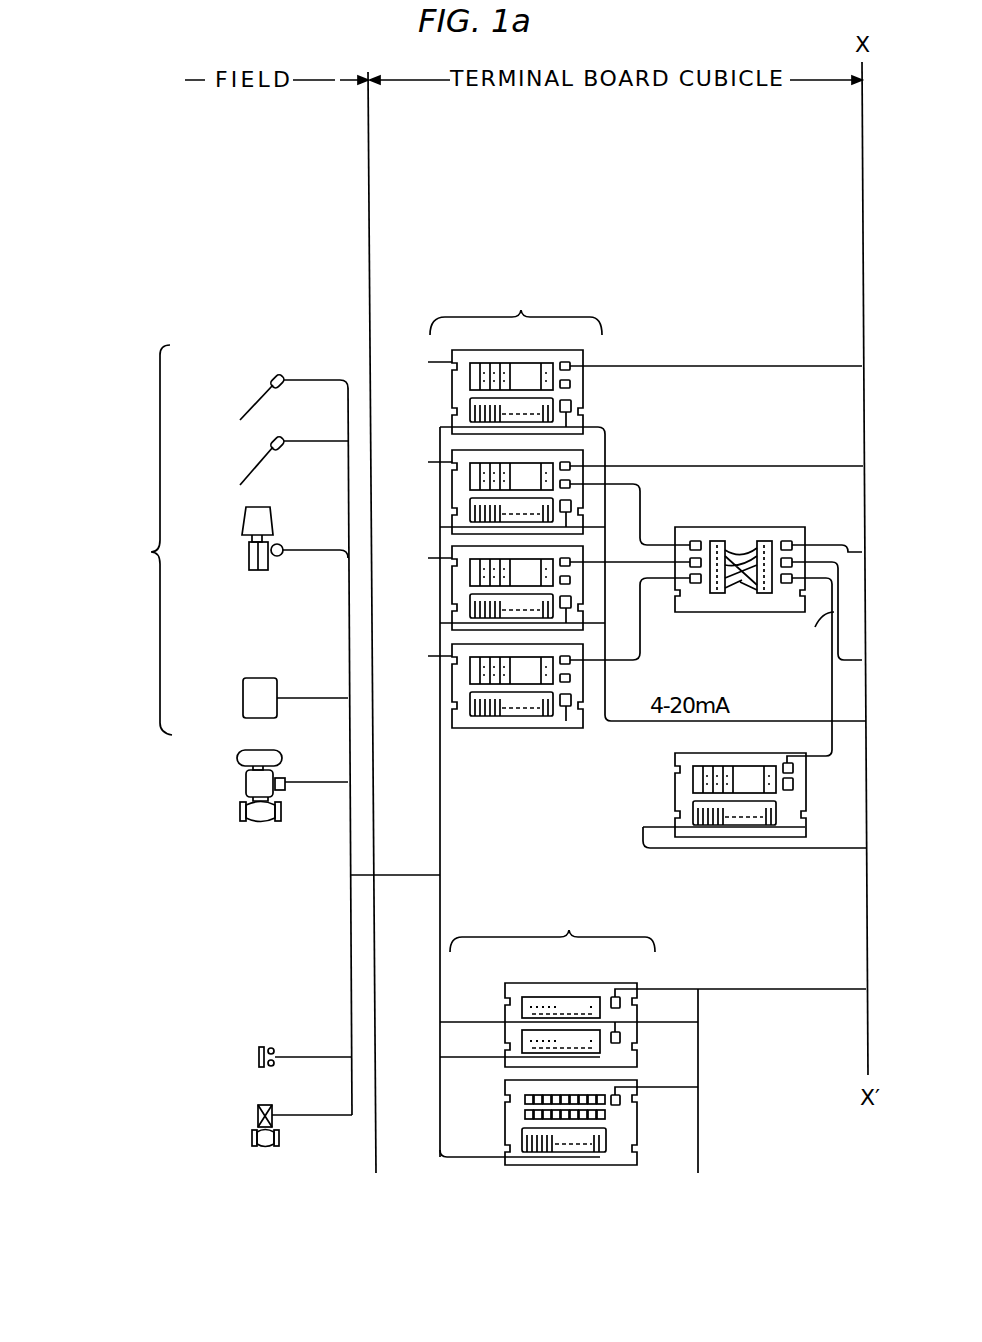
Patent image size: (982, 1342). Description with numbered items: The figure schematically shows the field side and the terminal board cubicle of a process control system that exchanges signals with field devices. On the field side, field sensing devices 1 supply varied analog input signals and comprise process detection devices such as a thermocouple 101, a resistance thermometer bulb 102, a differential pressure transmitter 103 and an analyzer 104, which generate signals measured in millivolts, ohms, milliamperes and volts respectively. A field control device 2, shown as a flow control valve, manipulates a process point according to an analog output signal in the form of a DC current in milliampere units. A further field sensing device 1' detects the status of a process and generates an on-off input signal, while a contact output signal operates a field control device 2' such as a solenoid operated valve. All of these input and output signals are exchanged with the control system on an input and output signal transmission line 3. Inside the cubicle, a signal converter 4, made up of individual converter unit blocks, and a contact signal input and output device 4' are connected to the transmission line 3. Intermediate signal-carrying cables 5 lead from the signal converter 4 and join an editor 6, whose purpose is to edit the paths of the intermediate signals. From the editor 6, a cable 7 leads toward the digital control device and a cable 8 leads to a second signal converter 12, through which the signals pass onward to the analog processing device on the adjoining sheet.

The field sensing devices 1 is at (246, 571).
The thermocouple 101 is at (272, 376).
The resistance thermometer bulb 102 is at (268, 453).
The differential pressure transmitter 103 is at (262, 570).
The analyzer 104 is at (262, 678).
The field control device 2 is at (282, 776).
The field sensing device 1' is at (285, 1034).
The field control device 2' is at (295, 1129).
The input and output signal transmission line 3 is at (398, 875).
The signal converter 4 is at (496, 506).
The contact signal input and output device 4' is at (569, 1038).
The intermediate signal-carrying cables 5 is at (760, 366).
The editor 6 is at (764, 527).
The cable 7 is at (820, 543).
The cable 8 is at (832, 683).
The second signal converter 12 is at (675, 753).